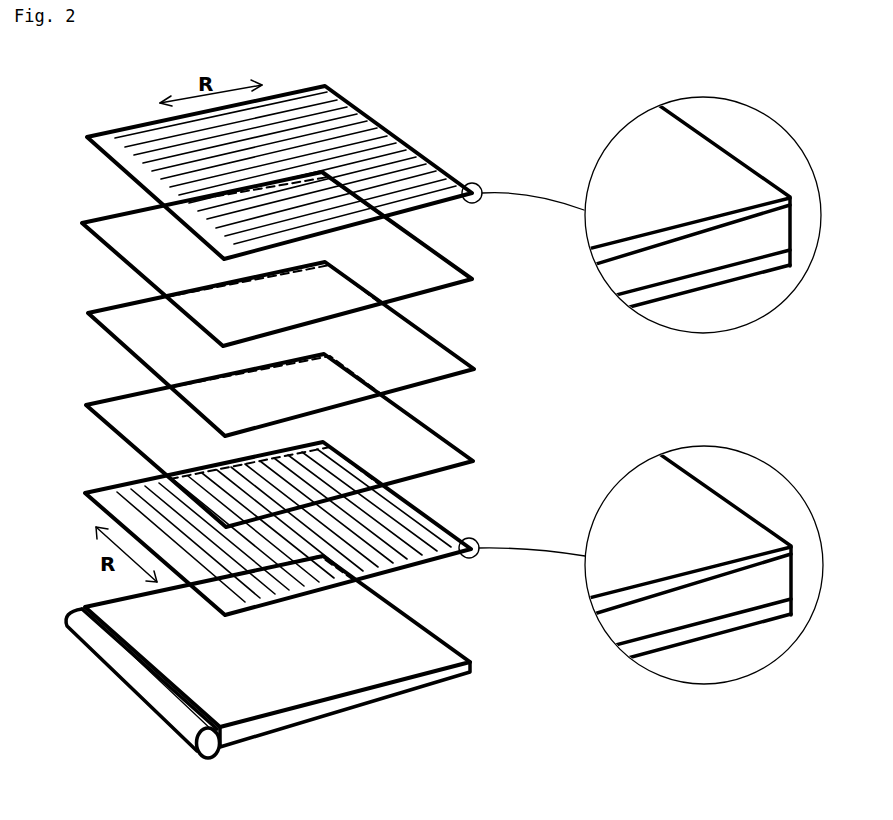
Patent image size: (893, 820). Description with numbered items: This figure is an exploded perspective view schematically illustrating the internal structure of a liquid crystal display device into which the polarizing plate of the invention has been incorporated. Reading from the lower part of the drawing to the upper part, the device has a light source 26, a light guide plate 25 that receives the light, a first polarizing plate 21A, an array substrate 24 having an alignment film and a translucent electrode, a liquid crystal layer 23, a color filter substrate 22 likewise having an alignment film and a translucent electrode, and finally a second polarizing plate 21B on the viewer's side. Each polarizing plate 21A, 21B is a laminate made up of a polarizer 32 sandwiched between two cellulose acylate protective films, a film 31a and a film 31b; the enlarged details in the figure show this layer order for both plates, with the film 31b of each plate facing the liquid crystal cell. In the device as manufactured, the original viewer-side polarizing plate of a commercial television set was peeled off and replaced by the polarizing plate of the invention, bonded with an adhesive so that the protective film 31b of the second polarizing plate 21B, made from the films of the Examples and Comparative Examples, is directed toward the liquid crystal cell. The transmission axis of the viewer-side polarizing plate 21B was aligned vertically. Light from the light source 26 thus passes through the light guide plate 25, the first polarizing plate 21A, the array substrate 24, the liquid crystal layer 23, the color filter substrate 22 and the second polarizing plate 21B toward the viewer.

The polarizing plate 21B is at (128, 143).
The polarizing plate 21A is at (433, 528).
The color filter substrate 22 is at (436, 268).
The liquid crystal layer 23 is at (440, 357).
The array substrate 24 is at (438, 448).
The light guide plate 25 is at (435, 653).
The light source 26 is at (208, 745).
The cellulose acylate film (protective film) 31a is at (780, 208).
The cellulose acylate film (protective film) 31b is at (767, 262).
The polarizer 32 is at (780, 229).